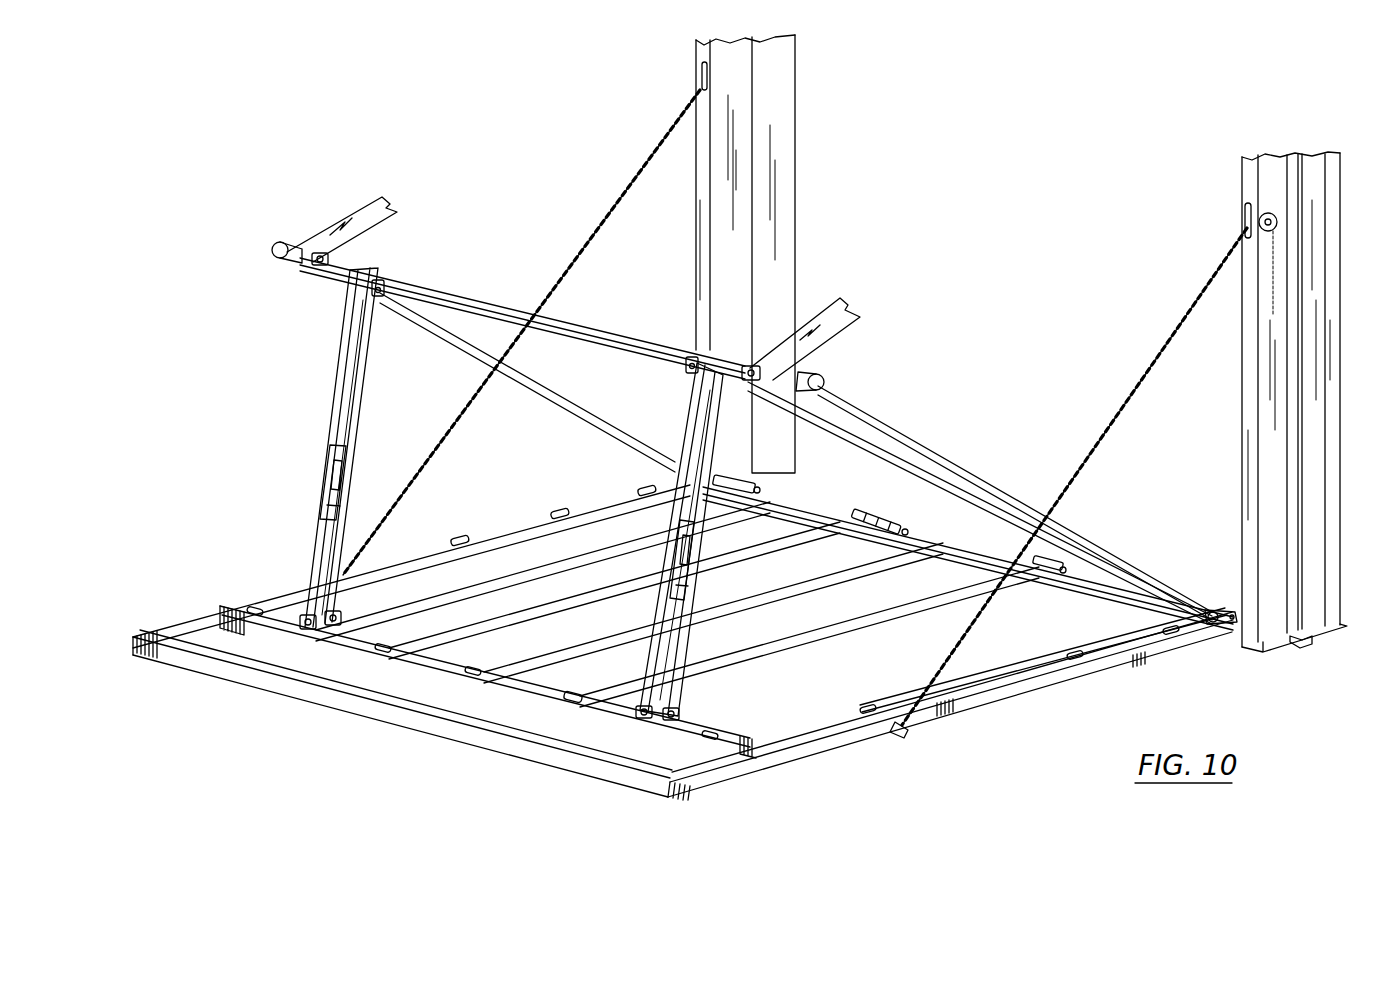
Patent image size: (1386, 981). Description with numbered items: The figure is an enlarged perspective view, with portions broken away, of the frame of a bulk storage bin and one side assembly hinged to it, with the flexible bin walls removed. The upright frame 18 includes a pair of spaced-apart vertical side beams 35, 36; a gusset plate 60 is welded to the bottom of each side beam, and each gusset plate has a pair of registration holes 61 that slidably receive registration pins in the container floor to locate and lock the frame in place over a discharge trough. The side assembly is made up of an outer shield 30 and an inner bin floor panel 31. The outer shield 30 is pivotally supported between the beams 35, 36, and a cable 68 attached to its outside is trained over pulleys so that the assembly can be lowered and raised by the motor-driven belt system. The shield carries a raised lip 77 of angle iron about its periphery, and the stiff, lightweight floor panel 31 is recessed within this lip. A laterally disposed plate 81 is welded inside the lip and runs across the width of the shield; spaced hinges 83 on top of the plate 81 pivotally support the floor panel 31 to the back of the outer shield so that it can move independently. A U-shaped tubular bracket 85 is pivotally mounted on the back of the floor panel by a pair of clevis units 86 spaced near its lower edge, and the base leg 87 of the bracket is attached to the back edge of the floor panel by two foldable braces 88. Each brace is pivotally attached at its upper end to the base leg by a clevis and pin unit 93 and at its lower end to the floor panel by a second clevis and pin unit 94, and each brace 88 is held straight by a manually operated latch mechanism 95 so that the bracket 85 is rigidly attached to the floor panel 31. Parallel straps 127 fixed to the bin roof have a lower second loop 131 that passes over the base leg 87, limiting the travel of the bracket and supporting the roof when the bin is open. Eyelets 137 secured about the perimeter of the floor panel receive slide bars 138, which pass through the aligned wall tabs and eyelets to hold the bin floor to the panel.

The upright frame 18 is at (1309, 425).
The outer shield 30 is at (683, 648).
The bin floor panel 31 is at (677, 604).
The vertical side beam 35 is at (1342, 293).
The vertical side beam 36 is at (795, 138).
The gusset plate 60 is at (1272, 656).
The registration holes 61 is at (1305, 645).
The cable 68 is at (612, 205).
The raised lip 77 is at (735, 768).
The laterally disposed plate 81 is at (835, 515).
The hinges 83 is at (760, 490).
The U-shaped tubular bracket 85 is at (1131, 548).
The clevis units 86 is at (947, 460).
The base leg 87 is at (458, 290).
The foldable braces 88 is at (327, 386).
The clevis and pin unit 93 is at (384, 284).
The second clevis and pin unit 94 is at (341, 620).
The latch mechanism 95 is at (312, 472).
The straps 127 is at (417, 206).
The second loop 131 is at (300, 262).
The eyelets 137 is at (577, 703).
The slide bars 138 is at (500, 686).